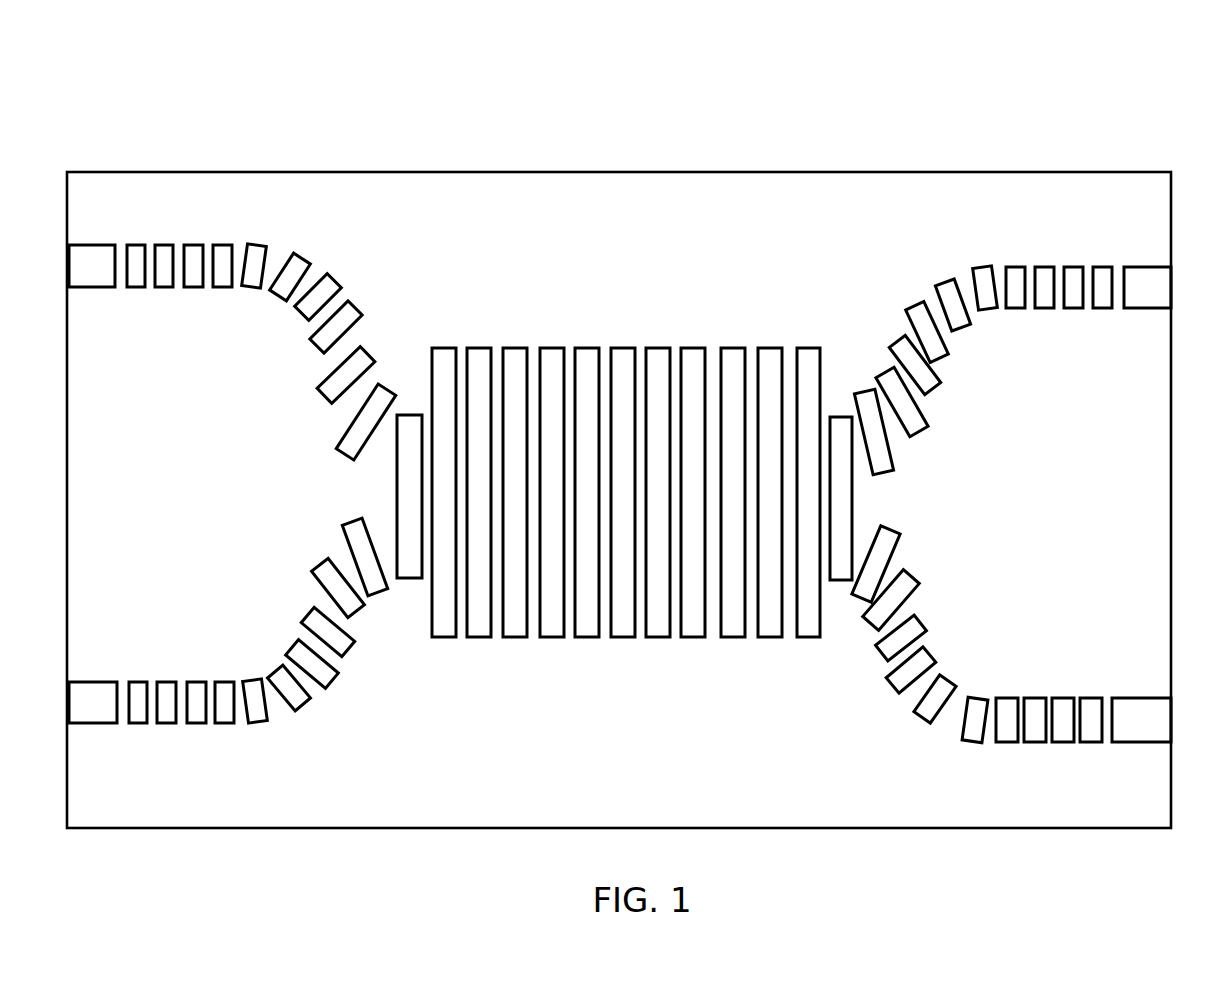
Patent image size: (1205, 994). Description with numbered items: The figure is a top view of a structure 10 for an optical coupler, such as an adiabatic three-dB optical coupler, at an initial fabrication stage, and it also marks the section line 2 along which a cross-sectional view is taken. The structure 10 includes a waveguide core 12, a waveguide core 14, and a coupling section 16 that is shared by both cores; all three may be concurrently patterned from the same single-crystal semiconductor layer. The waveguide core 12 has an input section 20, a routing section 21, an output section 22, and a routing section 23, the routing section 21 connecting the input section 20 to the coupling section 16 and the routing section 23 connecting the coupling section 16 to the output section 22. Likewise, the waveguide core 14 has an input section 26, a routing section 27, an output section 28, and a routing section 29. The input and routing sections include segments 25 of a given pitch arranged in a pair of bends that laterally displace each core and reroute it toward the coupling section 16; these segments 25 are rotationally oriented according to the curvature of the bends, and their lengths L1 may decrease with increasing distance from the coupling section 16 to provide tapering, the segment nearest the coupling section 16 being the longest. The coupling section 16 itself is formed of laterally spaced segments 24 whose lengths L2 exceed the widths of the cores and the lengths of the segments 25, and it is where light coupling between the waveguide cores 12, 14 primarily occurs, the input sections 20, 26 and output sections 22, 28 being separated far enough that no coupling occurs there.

The structure 10 is at (158, 230).
The waveguide core 12 is at (223, 288).
The waveguide core 14 is at (183, 625).
The coupling section 16 is at (410, 109).
The input section 20 is at (235, 109).
The routing section 21 is at (407, 77).
The output section 22 is at (1105, 109).
The routing section 23 is at (985, 77).
The segments 24 is at (483, 380).
The segments 25 is at (350, 317).
The input section 26 is at (243, 845).
The routing section 27 is at (242, 877).
The output section 28 is at (988, 843).
The routing section 29 is at (993, 876).
The lengths of the segments L1 is at (252, 627).
The second spacing length L2 is at (809, 290).
The section line 2- 2 is at (607, 308).